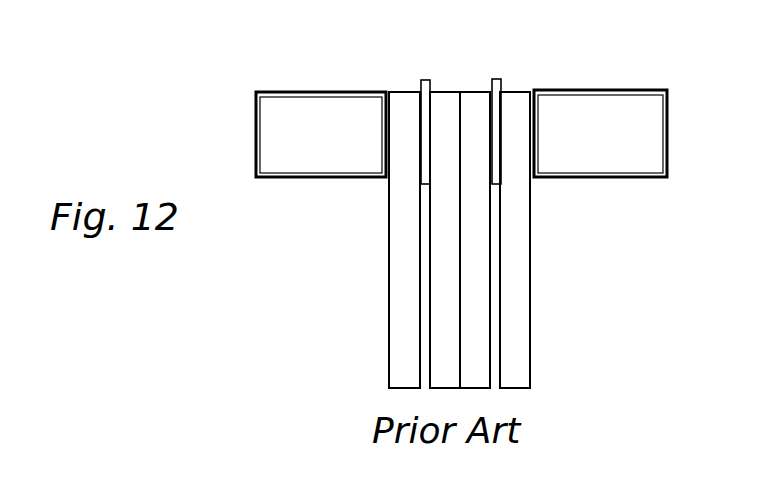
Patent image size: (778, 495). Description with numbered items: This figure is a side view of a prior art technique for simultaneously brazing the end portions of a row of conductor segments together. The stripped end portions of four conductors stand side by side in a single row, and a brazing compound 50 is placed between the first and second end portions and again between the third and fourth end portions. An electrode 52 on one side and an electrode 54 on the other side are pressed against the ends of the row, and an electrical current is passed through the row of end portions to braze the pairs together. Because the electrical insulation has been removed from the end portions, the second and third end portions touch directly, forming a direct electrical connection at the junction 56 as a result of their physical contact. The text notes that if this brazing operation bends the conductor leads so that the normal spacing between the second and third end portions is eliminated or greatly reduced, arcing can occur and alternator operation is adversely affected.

The brazing compound 50 is at (425, 80).
The electrode 52 is at (315, 178).
The electrode 54 is at (600, 178).
The junction 56 is at (460, 84).